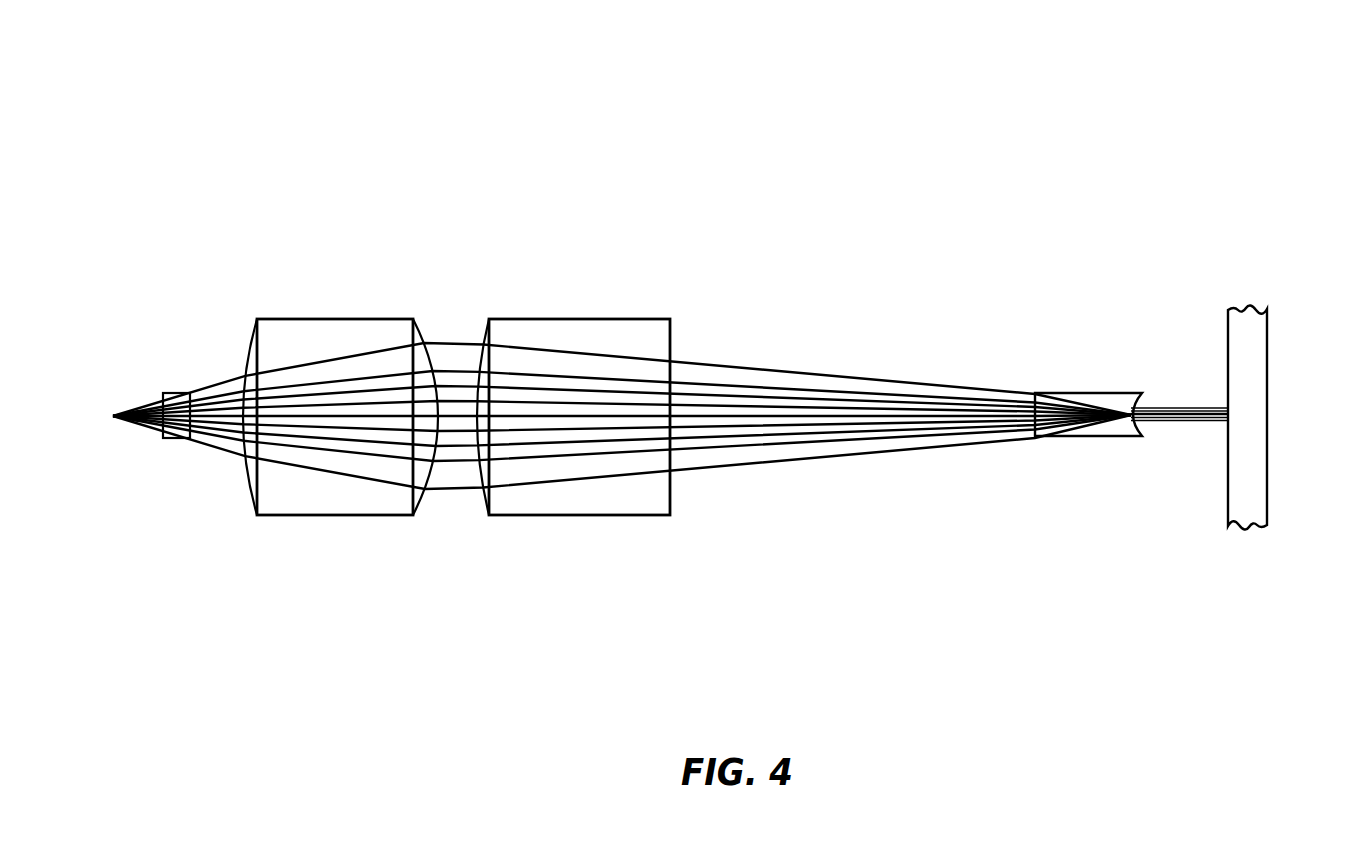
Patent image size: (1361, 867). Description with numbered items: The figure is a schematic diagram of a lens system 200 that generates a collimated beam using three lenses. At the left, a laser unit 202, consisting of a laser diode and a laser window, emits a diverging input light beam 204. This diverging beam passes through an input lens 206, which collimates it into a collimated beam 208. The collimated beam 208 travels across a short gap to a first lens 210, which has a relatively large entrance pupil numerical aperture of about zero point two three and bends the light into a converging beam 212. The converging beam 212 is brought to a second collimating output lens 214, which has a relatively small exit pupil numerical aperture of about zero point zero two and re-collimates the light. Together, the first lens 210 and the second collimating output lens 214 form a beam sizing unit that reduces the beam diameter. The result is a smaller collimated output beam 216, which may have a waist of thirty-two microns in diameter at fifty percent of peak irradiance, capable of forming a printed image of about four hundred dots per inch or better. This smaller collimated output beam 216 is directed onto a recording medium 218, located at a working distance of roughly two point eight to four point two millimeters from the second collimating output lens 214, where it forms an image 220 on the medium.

The lens system 200 is at (641, 152).
The laser unit 202 is at (146, 449).
The diverging input light beam 204 is at (212, 380).
The input lens 206 is at (328, 319).
The collimated beam 208 is at (457, 490).
The first lens 210 is at (585, 319).
The converging beam 212 is at (770, 462).
The second collimating output lens 214 is at (1080, 392).
The smaller collimated output beam 216 is at (1192, 422).
The recording medium 218 is at (1268, 365).
The image 220 is at (1216, 400).